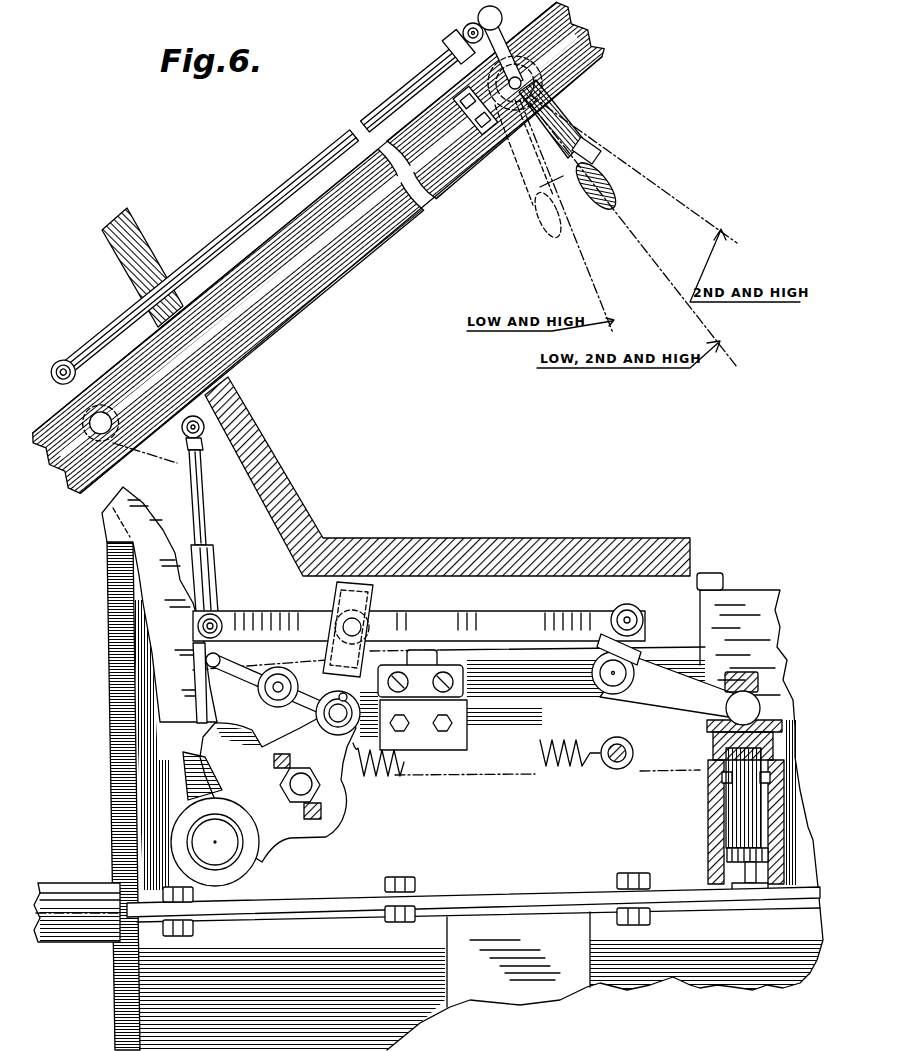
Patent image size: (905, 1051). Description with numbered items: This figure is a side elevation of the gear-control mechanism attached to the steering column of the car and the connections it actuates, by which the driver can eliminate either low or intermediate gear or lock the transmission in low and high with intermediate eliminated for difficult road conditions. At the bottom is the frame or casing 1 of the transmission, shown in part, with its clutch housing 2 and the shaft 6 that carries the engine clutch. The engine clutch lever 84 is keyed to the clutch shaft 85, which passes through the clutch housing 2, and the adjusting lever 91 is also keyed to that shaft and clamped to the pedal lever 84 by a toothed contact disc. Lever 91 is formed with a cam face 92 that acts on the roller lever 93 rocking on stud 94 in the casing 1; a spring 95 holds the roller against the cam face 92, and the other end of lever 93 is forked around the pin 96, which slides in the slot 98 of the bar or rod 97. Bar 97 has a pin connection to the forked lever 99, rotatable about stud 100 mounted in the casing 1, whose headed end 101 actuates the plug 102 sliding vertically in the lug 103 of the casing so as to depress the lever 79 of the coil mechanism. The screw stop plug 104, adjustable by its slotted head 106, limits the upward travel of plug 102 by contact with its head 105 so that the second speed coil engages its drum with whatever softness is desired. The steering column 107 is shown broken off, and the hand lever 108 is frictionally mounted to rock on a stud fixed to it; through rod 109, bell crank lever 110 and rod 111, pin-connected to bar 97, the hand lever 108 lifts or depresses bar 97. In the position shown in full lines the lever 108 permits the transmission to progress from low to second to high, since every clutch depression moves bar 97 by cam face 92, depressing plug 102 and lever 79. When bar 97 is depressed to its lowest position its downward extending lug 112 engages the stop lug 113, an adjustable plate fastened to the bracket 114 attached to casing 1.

The frame or casing 1 is at (475, 937).
The clutch housing 2 is at (148, 855).
The shaft 6 is at (92, 935).
The arm (lever) 79 is at (727, 866).
The engine clutch lever 84 is at (159, 604).
The clutch shaft 85 is at (200, 837).
The adjusting lever 91 is at (293, 825).
The cam face 92 is at (253, 717).
The roller lever 93 is at (296, 724).
The stud 94 is at (347, 762).
The spring 95 is at (580, 768).
The pin 96 is at (346, 622).
The bar or rod 97 is at (470, 622).
The slot 98 is at (375, 594).
The forked lever 99 is at (640, 629).
The stud 100 is at (610, 680).
The headed end 101 is at (756, 706).
The plug 102 is at (740, 800).
The lug 103 is at (712, 780).
The screw stop plug 104 is at (722, 760).
The head 105 is at (727, 852).
The slotted head 106 is at (710, 724).
The steering column 107 is at (323, 287).
The hand lever 108 is at (578, 133).
The rod 109 is at (245, 216).
The bell crank lever 110 is at (72, 392).
The rod 111 is at (205, 500).
The downward extending lug 112 is at (480, 650).
The stop lug 113 is at (423, 650).
The bracket 114 is at (428, 732).